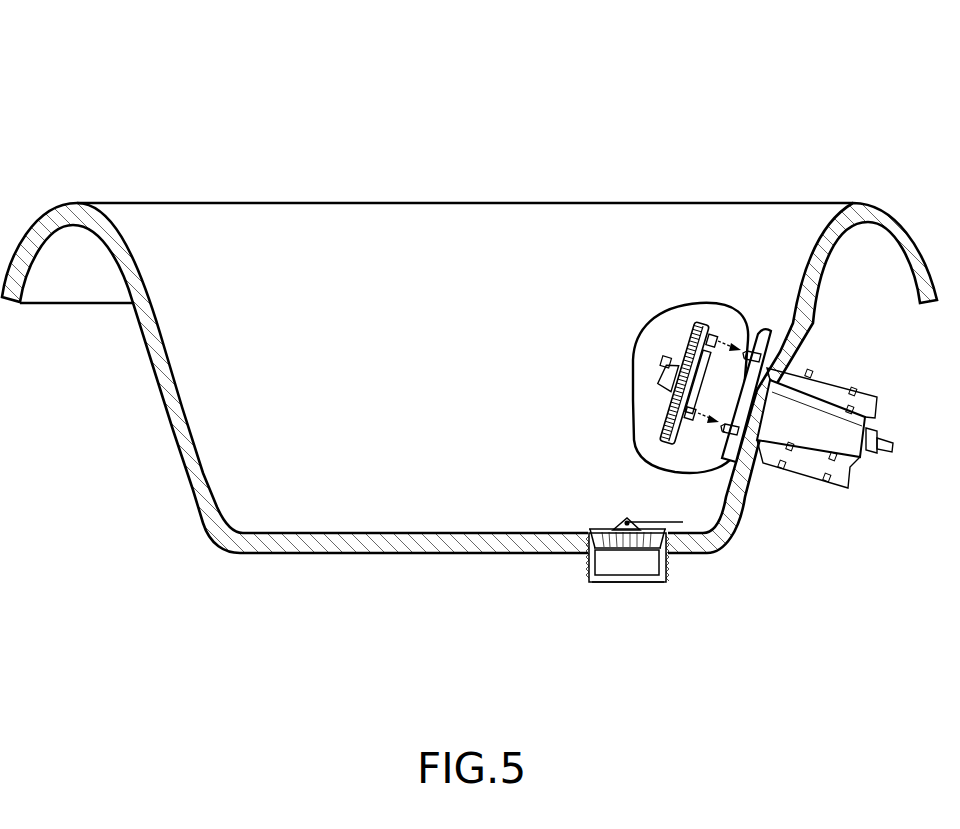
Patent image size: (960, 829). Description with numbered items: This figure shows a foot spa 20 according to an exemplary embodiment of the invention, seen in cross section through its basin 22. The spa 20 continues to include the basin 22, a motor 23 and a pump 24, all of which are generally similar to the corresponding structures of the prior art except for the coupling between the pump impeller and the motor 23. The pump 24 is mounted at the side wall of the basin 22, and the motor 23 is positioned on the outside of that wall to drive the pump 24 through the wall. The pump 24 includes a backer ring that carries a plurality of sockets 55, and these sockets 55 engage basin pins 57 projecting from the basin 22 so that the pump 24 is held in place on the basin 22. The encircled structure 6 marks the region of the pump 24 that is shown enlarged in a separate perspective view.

The spa 20 is at (621, 132).
The basin 22 is at (757, 223).
The pump 24 is at (681, 297).
The encircled structure 6 is at (633, 368).
The sockets 55 is at (714, 334).
The basin pins 57 is at (757, 350).
The motor 23 is at (824, 498).